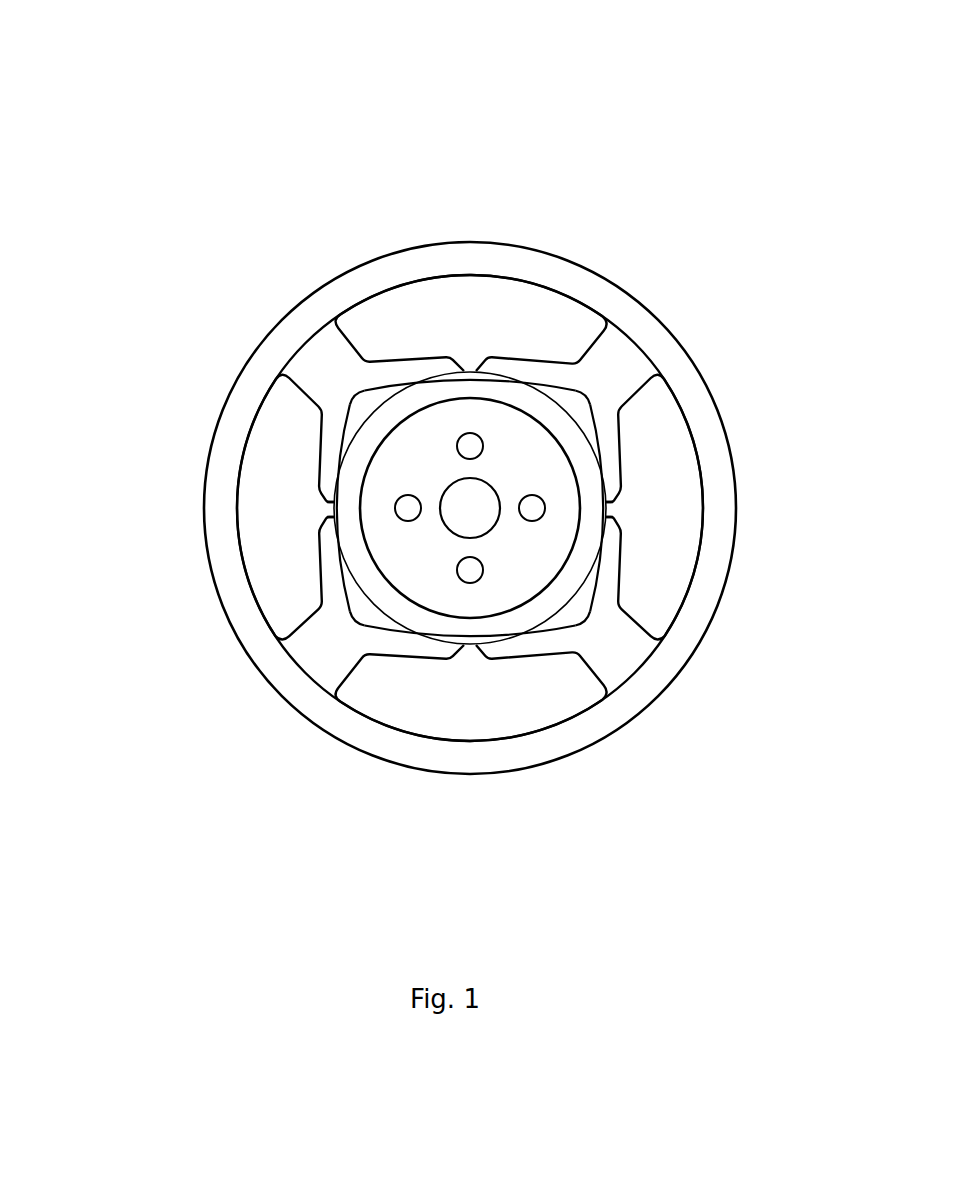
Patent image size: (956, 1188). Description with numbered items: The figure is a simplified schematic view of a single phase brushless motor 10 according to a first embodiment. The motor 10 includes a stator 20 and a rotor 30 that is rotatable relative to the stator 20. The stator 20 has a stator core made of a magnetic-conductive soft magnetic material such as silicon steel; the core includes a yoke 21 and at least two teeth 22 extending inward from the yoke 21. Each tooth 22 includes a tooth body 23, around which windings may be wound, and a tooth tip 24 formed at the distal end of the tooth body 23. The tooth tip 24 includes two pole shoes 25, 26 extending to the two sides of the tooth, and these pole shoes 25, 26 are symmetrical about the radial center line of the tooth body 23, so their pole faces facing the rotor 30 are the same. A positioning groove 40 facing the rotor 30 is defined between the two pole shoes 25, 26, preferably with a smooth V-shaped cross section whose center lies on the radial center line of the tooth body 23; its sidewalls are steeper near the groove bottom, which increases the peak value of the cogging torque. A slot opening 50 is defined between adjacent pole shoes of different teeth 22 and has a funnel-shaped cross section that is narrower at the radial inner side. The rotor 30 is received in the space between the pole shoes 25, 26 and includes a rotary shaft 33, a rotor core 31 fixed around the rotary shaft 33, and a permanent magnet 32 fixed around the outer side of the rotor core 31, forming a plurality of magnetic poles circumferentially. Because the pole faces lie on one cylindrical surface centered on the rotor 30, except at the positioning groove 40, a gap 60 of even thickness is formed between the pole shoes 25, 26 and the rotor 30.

The single phase brushless motor 10 is at (482, 78).
The stator 20 is at (190, 527).
The yoke 21 is at (235, 590).
The tooth 22 is at (344, 684).
The tooth body 23 is at (318, 662).
The tooth tip 24 is at (353, 630).
The pole shoe 25 is at (537, 645).
The pole shoe 26 is at (608, 582).
The rotor 30 is at (470, 362).
The rotor core 31 is at (427, 432).
The permanent magnet 32 is at (437, 387).
The rotary shaft 33 is at (457, 498).
The positioning groove 40 is at (578, 610).
The slot opening 50 is at (612, 512).
The gap 60 is at (604, 477).